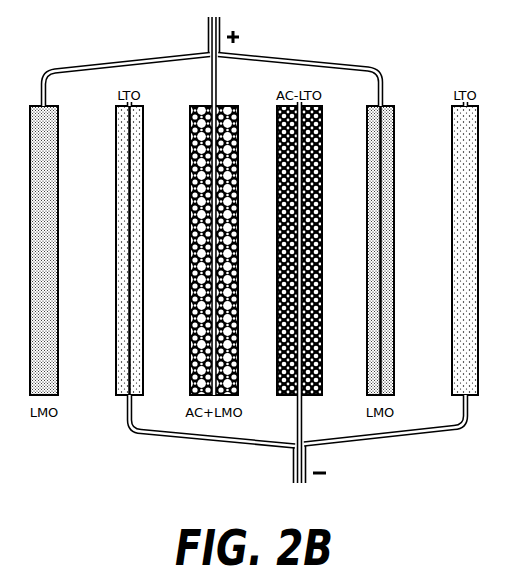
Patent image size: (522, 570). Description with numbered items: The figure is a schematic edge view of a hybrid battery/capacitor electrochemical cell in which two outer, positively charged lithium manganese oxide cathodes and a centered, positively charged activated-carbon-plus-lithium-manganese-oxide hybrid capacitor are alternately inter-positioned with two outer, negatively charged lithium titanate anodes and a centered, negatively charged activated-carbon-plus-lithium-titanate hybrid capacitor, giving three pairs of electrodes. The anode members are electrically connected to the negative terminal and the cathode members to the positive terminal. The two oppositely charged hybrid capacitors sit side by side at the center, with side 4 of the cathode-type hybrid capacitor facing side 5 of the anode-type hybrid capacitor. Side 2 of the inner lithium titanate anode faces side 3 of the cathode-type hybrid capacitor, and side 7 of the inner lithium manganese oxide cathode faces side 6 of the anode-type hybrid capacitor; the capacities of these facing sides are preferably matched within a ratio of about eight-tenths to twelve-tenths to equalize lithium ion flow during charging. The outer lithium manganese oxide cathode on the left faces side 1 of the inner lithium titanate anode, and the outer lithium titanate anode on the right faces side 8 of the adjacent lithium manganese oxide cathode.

The side of the inner LTO anode 1 is at (116, 251).
The side of the LTO anode 2 is at (142, 251).
The side of the AC+LMO hybrid capacitor 3 is at (197, 251).
The side of the AC+LMO hybrid capacitor 4 is at (231, 251).
The side of the AC+LTO hybrid capacitor 5 is at (282, 251).
The side of the AC+LTO hybrid capacitor 6 is at (316, 251).
The side of the LMO cathode 7 is at (368, 251).
The side of the adjacent LMO cathode 8 is at (393, 251).